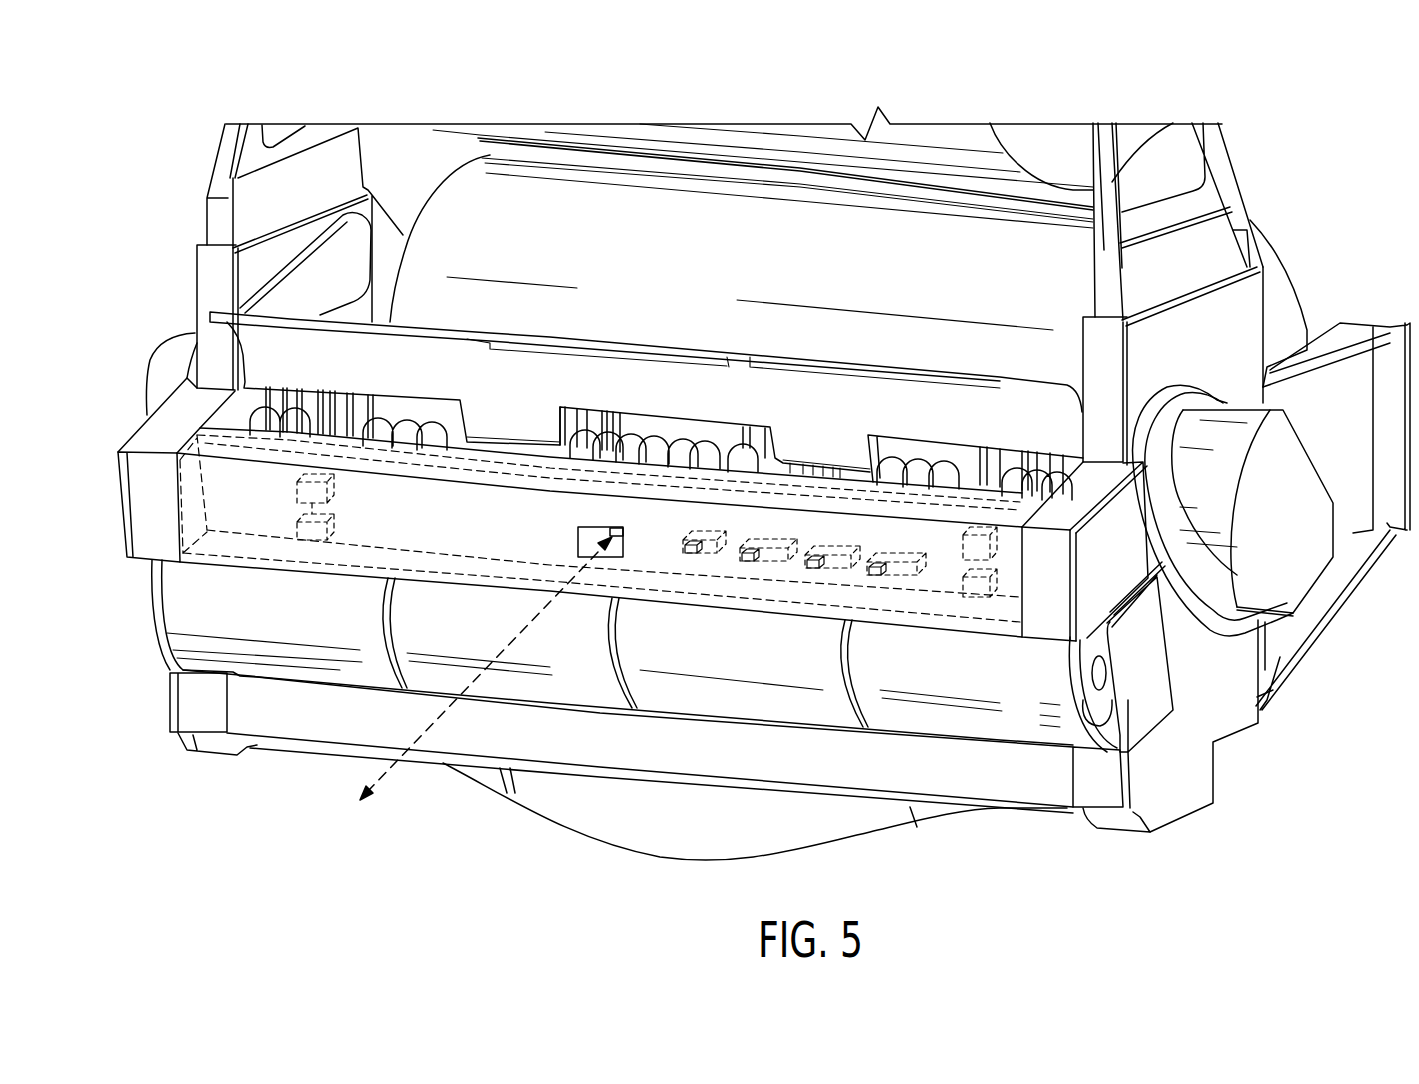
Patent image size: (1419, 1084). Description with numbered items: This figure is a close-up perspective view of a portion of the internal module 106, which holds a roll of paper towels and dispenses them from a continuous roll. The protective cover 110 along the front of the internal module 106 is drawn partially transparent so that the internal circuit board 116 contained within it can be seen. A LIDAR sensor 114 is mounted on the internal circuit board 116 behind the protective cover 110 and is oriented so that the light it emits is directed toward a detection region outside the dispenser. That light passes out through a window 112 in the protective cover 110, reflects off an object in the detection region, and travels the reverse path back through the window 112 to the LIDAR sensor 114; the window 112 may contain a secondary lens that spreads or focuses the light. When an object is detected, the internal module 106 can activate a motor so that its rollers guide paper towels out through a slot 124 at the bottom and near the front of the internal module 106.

The internal module 106 is at (330, 88).
The protective cover 110 is at (197, 523).
The window 112 is at (572, 523).
The LIDAR sensor 114 is at (623, 547).
The internal circuit board 116 is at (363, 523).
The slot 124 is at (814, 812).